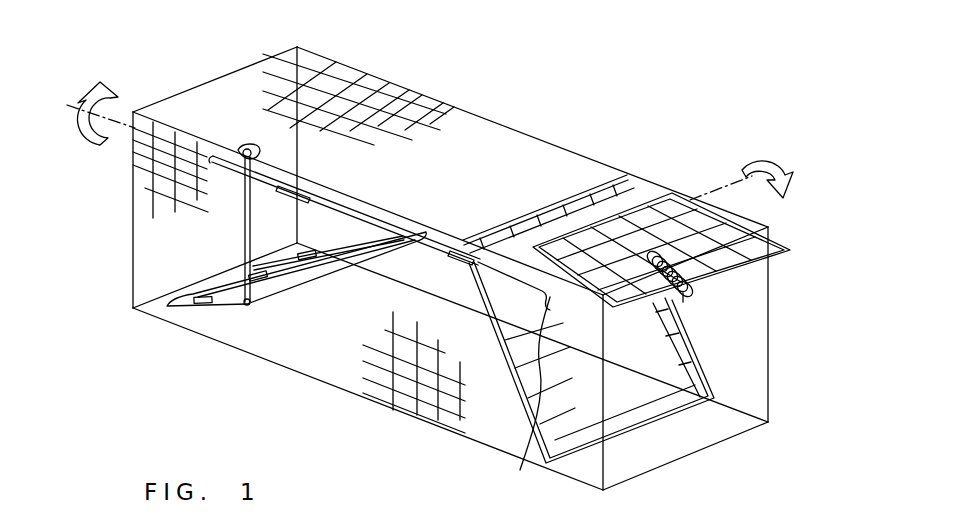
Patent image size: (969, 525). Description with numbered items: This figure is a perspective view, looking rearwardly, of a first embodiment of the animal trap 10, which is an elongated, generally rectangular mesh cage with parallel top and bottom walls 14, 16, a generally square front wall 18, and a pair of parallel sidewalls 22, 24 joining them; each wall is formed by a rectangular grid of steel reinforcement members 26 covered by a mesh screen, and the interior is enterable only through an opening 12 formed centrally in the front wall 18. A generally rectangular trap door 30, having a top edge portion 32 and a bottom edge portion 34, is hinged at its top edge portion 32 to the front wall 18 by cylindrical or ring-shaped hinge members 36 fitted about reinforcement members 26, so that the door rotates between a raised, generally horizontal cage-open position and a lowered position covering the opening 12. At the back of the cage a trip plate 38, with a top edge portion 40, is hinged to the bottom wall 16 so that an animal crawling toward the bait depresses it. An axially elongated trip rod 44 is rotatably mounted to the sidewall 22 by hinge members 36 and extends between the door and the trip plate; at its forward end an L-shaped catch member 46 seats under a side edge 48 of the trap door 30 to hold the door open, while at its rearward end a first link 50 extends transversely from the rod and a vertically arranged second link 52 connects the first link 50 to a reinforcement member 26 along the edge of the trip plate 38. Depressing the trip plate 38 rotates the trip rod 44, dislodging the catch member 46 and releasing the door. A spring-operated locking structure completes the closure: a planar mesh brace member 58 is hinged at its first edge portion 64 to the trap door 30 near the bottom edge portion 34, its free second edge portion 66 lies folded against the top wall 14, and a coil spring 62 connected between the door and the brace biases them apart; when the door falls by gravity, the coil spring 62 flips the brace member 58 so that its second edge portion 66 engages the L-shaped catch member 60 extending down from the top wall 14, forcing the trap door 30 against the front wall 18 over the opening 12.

The animal trap 10 is at (704, 520).
The opening 12 is at (680, 413).
The top wall 14 is at (341, 99).
The bottom wall 16 is at (612, 468).
The front wall 18 is at (620, 438).
The sidewall 22 is at (385, 386).
The sidewall 24 is at (766, 385).
The reinforcement members 26 is at (324, 72).
The trap door 30 is at (779, 241).
The top edge portion 32 is at (490, 305).
The bottom edge portion 34 is at (768, 260).
The hinge members 36 is at (617, 197).
The trip plate 38 is at (200, 316).
The top edge portion 40 is at (280, 303).
The trip rod 44 is at (337, 203).
The catch member 46 is at (560, 335).
The side edge 48 is at (521, 406).
The first link 50 is at (234, 143).
The second link 52 is at (243, 220).
The brace member 58 is at (684, 194).
The catch member 60 is at (745, 257).
The coil spring 62 is at (733, 273).
The first edge portion 64 is at (710, 283).
The second edge portion 66 is at (647, 192).